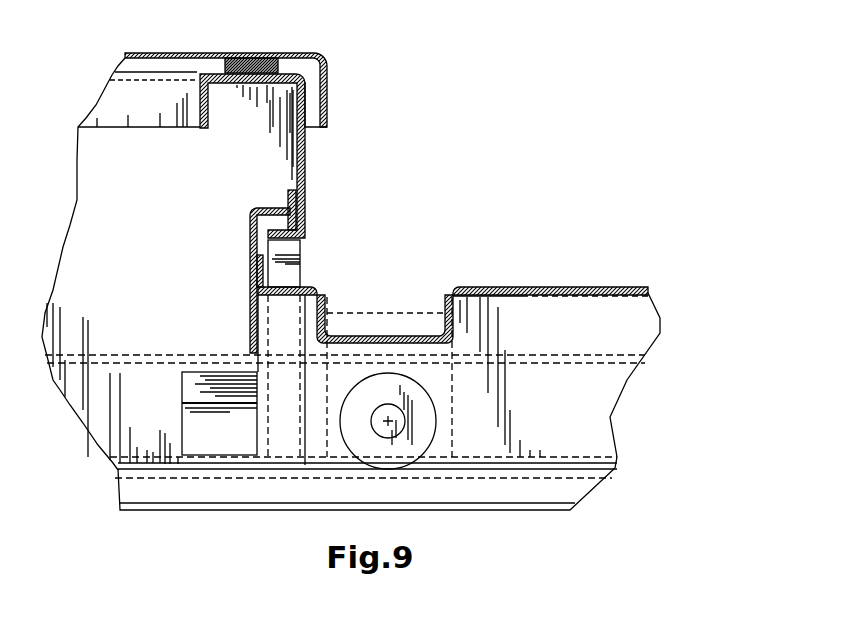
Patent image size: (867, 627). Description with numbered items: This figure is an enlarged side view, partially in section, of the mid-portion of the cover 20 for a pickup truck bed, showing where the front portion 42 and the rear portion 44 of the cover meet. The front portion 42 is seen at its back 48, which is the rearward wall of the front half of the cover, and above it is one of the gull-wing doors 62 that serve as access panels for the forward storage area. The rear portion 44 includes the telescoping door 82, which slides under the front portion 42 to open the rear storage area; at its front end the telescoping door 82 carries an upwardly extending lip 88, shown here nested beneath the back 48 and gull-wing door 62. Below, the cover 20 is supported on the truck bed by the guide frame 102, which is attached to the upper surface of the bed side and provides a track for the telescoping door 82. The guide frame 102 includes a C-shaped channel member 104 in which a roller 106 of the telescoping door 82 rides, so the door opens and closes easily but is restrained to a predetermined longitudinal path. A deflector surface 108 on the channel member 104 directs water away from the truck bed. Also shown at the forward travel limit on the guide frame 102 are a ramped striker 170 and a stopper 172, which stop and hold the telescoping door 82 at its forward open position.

The cover 20 is at (412, 186).
The front portion 42 is at (313, 49).
The rear portion 44 is at (576, 283).
The back 48 is at (305, 152).
The gull-wing doors 62 is at (154, 53).
The telescoping door 82 is at (627, 287).
The upwardly extending lip 88 is at (273, 206).
The guide frame 102 is at (636, 459).
The C-shaped channel member 104 is at (600, 358).
The roller 106 is at (427, 450).
The deflector surface 108 is at (570, 485).
The ramped striker 170 is at (358, 380).
The stopper 172 is at (222, 415).